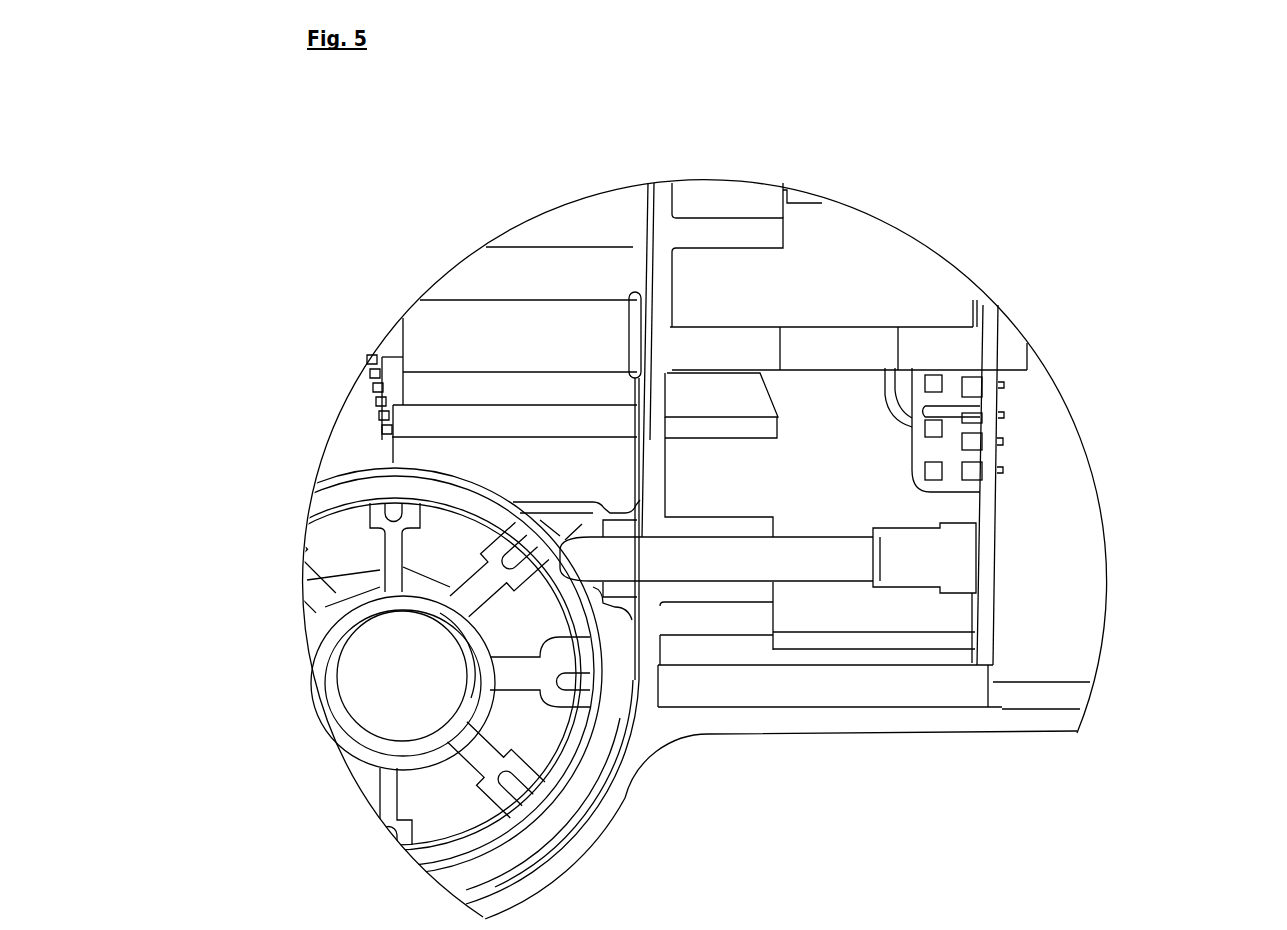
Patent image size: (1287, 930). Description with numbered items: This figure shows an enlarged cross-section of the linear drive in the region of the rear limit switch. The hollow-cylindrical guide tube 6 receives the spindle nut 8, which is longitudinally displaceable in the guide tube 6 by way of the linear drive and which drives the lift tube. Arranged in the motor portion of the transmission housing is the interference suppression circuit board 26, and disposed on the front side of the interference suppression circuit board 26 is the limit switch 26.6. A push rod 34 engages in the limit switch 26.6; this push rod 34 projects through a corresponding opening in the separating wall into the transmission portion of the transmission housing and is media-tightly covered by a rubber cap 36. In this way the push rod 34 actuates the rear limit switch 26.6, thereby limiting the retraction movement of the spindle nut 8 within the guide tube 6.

The guide tube 6 is at (367, 523).
The spindle nut 8 is at (378, 687).
The interference suppression circuit board 26 is at (982, 637).
The limit switch 26.6 is at (923, 550).
The push rod 34 is at (753, 555).
The rubber cap 36 is at (588, 553).